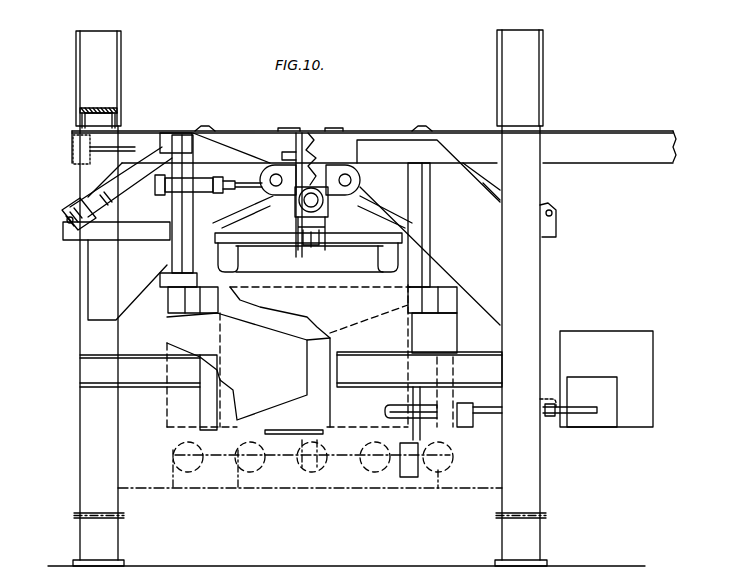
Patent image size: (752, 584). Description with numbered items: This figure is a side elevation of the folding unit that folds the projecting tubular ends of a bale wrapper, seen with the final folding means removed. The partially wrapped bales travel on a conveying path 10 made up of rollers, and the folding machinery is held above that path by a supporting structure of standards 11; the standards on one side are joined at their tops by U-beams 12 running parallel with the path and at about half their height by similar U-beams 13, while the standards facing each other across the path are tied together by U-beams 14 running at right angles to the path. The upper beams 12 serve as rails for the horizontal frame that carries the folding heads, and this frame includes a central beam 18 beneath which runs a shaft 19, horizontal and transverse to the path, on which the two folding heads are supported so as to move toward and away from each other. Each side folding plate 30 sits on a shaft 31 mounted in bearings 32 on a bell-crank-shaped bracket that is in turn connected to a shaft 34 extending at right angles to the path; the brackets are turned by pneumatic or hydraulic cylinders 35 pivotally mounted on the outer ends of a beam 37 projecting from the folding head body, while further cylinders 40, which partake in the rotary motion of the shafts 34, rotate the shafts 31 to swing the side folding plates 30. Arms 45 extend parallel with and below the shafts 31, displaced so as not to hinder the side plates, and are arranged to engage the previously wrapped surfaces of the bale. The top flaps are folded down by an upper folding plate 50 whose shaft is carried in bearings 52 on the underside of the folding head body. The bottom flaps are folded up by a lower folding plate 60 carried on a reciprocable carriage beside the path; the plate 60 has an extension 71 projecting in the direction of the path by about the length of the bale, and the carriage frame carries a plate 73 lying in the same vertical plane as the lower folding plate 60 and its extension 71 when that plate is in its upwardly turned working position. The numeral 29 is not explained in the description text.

The conveying path 10 is at (240, 489).
The standards 11 is at (84, 404).
The U-beams 12 is at (142, 145).
The U-beams 13 is at (149, 384).
The U-beams 14 is at (93, 106).
The beam 18 is at (300, 140).
The shaft 19 is at (318, 201).
The plate 29 is at (290, 436).
The side folding plate 30 is at (310, 356).
The shaft 31 is at (176, 212).
The bearings 32 is at (270, 203).
The shaft 34 is at (272, 174).
The cylinders 35 is at (100, 192).
The beam 37 is at (142, 232).
The cylinders 40 is at (212, 180).
The arms 45 is at (208, 397).
The upper folding plate 50 is at (312, 260).
The bearings 52 is at (240, 266).
The lower folding plate 60 is at (328, 436).
The extension 71 is at (550, 402).
The plate 73 is at (645, 400).